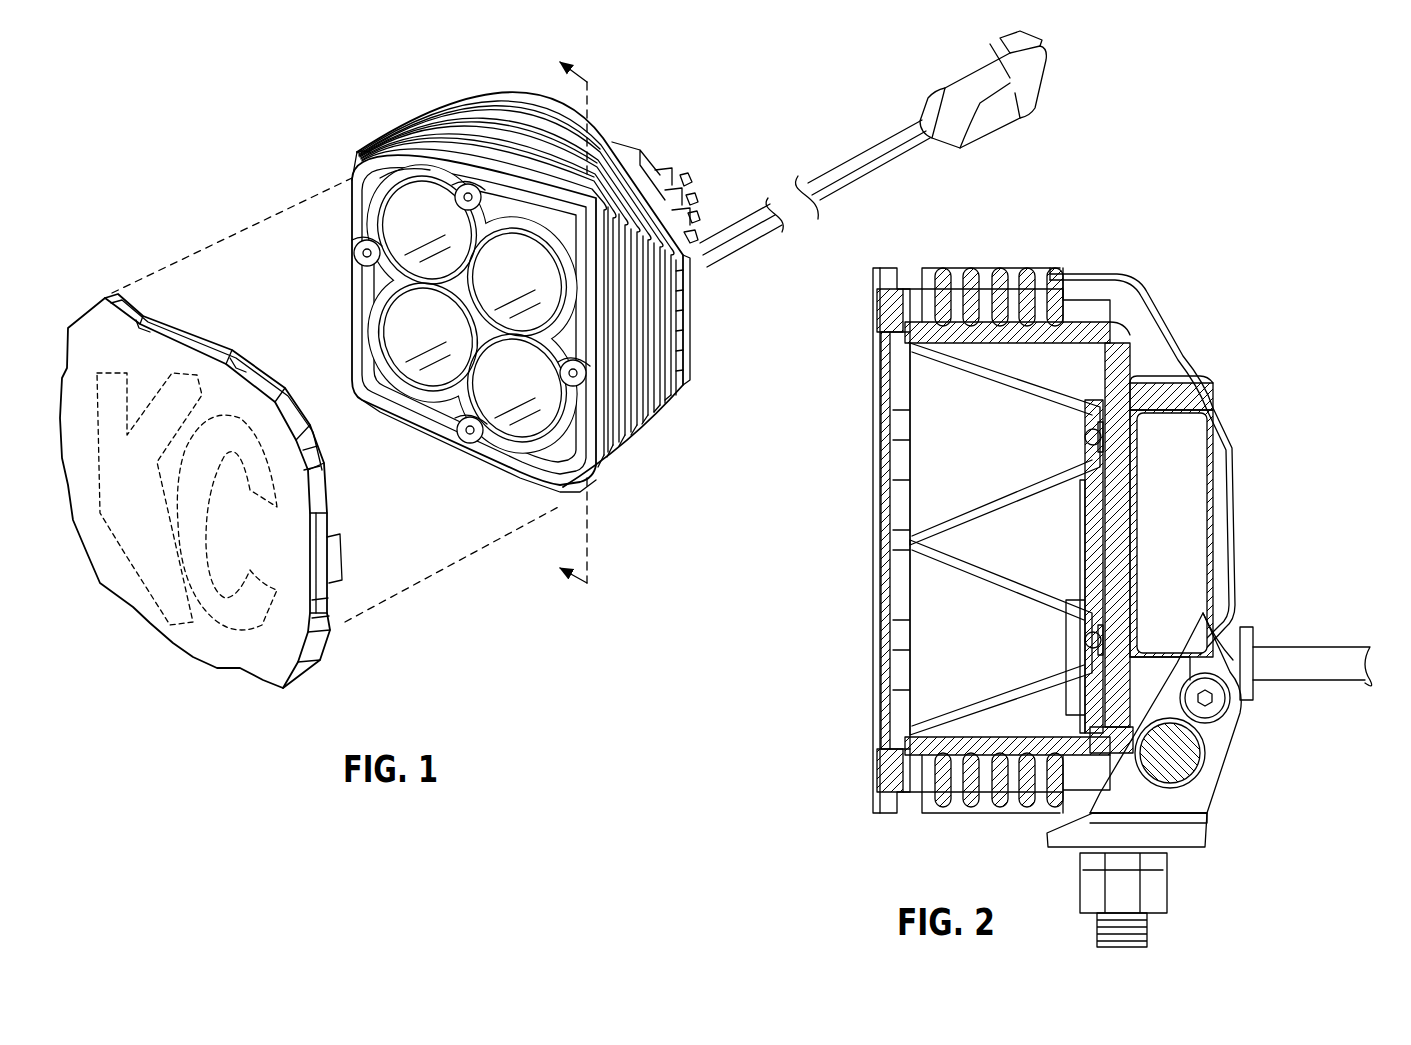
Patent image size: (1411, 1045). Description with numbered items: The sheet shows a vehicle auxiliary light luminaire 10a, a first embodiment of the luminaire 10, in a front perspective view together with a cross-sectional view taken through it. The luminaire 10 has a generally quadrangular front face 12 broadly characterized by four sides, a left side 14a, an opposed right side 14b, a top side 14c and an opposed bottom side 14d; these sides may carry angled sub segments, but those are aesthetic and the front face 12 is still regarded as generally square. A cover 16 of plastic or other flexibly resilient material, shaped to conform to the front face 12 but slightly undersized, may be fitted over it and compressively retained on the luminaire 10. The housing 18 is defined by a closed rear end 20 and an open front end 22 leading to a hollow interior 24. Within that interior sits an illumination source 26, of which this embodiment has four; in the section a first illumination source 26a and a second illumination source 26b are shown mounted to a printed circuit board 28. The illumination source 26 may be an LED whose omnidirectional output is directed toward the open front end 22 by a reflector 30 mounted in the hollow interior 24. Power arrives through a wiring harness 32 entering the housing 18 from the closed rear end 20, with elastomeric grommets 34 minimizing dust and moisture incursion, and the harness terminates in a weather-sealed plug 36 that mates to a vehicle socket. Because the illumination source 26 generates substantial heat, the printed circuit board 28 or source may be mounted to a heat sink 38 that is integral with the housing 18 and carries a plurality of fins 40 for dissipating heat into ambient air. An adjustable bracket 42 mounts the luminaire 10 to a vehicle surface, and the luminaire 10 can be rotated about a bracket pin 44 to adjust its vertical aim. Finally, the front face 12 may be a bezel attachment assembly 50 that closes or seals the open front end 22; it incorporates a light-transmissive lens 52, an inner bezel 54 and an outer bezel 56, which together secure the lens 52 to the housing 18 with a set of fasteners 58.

In FIG. 1, the luminaire 10 is at (237, 157).
In FIG. 1, the vehicle auxiliary light luminaire 10a is at (554, 364).
In FIG. 1, the front face 12 is at (412, 430).
In FIG. 2, the front face 12 is at (862, 465).
In FIG. 1, the left side 14a is at (640, 478).
In FIG. 1, the right side 14b is at (345, 303).
In FIG. 1, the top side 14c is at (437, 102).
In FIG. 1, the bottom side 14d is at (455, 458).
In FIG. 1, the cover 16 is at (188, 638).
In FIG. 1, the housing 18 is at (635, 158).
In FIG. 2, the housing 18 is at (1100, 300).
In FIG. 1, the closed rear end 20 is at (712, 331).
In FIG. 2, the closed rear end 20 is at (1243, 497).
In FIG. 2, the open front end 22 is at (935, 585).
In FIG. 2, the hollow interior 24 is at (1056, 566).
In FIG. 2, the illumination source 26 is at (1031, 537).
In FIG. 2, the first illumination source 26a is at (1090, 432).
In FIG. 2, the second illumination source 26b is at (1088, 637).
In FIG. 2, the printed circuit board 28 is at (1105, 367).
In FIG. 2, the reflector 30 is at (997, 365).
In FIG. 1, the wiring harness 32 is at (865, 153).
In FIG. 2, the wiring harness 32 is at (1315, 680).
In FIG. 2, the elastomeric grommets 34 is at (1228, 700).
In FIG. 1, the weather-sealed plug 36 is at (1022, 108).
In FIG. 2, the heat sink 38 is at (1127, 546).
In FIG. 2, the fins 40 is at (945, 805).
In FIG. 2, the adjustable bracket 42 is at (1207, 828).
In FIG. 2, the bracket pin 44 is at (1232, 710).
In FIG. 1, the bezel attachment assembly 50 is at (372, 386).
In FIG. 2, the bezel attachment assembly 50 is at (878, 350).
In FIG. 1, the lens 52 is at (420, 226).
In FIG. 2, the lens 52 is at (888, 705).
In FIG. 1, the inner bezel 54 is at (385, 180).
In FIG. 1, the outer bezel 56 is at (378, 150).
In FIG. 1, the fasteners 58 is at (356, 255).